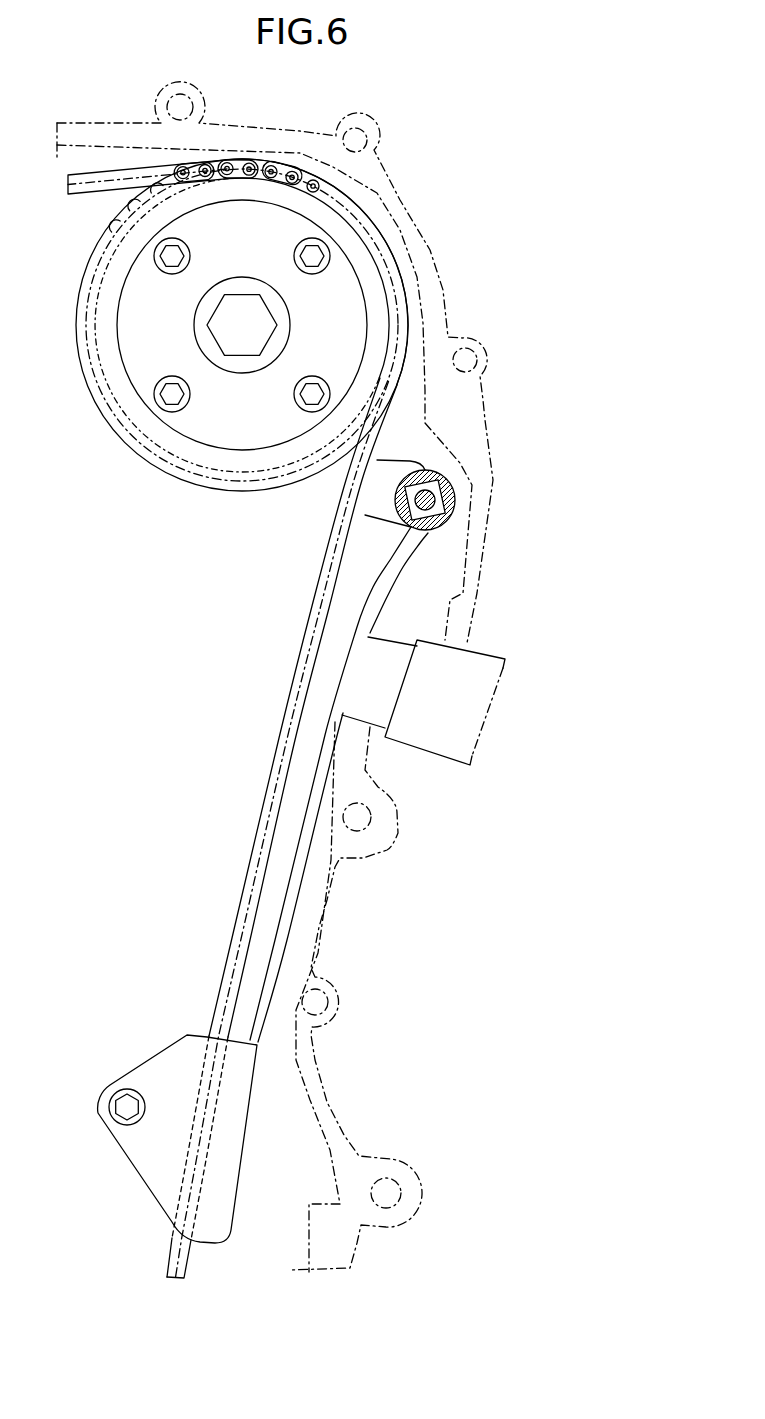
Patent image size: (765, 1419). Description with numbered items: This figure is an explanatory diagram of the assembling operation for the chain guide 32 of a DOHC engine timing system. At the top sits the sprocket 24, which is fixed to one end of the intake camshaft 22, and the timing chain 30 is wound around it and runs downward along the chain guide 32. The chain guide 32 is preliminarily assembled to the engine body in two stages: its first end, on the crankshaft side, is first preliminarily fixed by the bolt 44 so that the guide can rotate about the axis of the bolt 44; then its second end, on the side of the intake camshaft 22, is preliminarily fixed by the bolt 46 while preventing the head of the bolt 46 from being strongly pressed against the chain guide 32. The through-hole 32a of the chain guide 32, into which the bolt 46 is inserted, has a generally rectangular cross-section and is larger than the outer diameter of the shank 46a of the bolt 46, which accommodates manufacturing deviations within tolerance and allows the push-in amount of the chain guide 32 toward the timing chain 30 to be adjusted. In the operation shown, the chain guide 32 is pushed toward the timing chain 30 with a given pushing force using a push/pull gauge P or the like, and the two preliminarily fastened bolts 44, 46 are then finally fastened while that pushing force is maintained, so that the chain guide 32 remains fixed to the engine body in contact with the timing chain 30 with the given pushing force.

The intake camshaft 22 is at (228, 325).
The sprocket 24 is at (143, 422).
The timing chain 30 is at (272, 760).
The chain guide 32 is at (285, 852).
The through-hole 32a is at (452, 512).
The bolt 46 is at (499, 458).
The shank 46a is at (440, 490).
The bolt 44 is at (128, 1107).
The push/pull gauge P is at (470, 677).